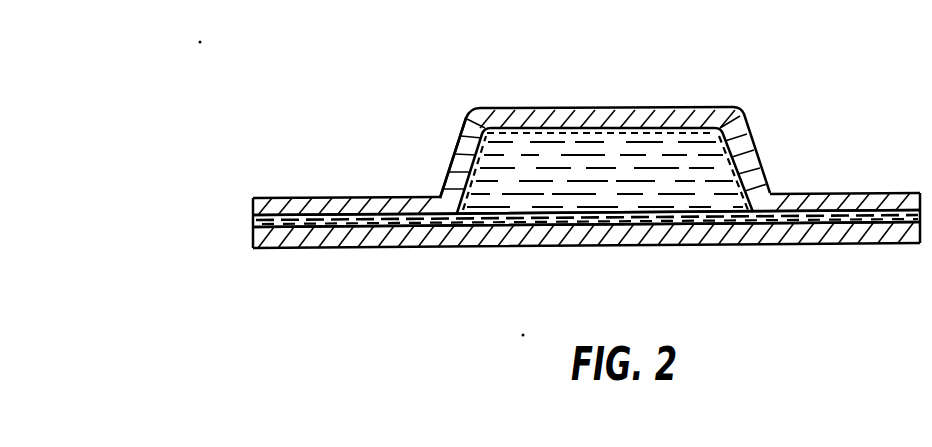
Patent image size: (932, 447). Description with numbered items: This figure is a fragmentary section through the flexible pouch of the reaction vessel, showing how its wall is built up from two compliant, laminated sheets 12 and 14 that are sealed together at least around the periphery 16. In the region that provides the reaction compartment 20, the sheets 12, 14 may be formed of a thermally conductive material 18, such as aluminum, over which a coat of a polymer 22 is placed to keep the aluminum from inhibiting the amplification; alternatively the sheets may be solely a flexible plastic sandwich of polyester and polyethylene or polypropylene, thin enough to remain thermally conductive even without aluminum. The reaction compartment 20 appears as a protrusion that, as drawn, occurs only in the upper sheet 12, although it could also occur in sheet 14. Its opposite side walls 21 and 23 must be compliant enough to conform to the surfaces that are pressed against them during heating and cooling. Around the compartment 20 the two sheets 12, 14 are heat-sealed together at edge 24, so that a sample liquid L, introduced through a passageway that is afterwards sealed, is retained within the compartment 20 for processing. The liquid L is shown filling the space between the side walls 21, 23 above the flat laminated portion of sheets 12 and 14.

The laminated sheet 12 is at (253, 203).
The laminated sheet 14 is at (253, 241).
The periphery 16 is at (333, 197).
The thermally conductive material 18 is at (810, 198).
The reaction compartment 20 is at (736, 109).
The side wall 21 is at (546, 131).
The polymer coat 22 is at (510, 223).
The side wall 23 is at (702, 208).
The edge 24 is at (441, 197).
The sample liquid L is at (624, 146).